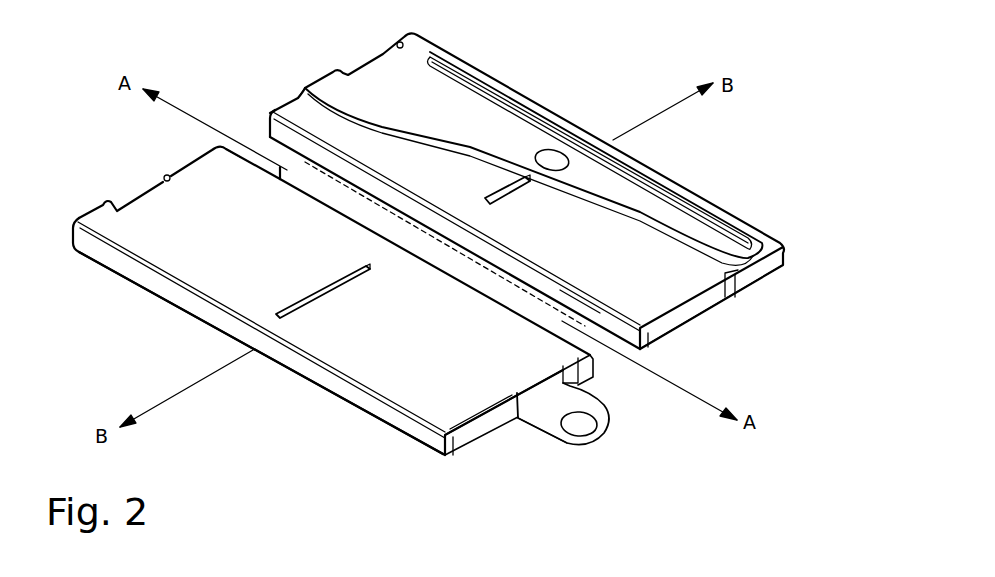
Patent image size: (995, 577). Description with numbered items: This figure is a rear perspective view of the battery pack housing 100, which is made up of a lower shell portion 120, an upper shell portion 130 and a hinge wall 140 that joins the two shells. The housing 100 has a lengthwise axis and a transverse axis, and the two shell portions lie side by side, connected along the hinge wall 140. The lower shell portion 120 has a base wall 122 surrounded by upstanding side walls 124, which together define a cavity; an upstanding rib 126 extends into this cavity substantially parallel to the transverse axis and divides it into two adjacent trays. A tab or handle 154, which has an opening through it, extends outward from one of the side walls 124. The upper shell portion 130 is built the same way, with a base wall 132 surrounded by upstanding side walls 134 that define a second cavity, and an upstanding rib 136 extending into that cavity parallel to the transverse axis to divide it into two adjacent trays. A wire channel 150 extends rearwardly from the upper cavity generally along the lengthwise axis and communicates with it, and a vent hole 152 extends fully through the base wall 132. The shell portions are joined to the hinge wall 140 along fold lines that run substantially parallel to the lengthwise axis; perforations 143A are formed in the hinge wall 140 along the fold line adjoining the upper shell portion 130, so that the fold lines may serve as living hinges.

The housing 100 is at (776, 214).
The lower shell portion 120 is at (333, 398).
The base wall 122 is at (187, 263).
The side walls 124 is at (600, 313).
The upstanding rib 126 is at (333, 297).
The upper shell portion 130 is at (727, 199).
The base wall 132 is at (308, 115).
The side walls 134 is at (703, 297).
The upstanding rib 136 is at (527, 183).
The hinge wall 140 is at (562, 334).
The perforations 143A is at (547, 297).
The wire channel 150 is at (368, 92).
The vent hole 152 is at (570, 162).
The tab or handle 154 is at (607, 420).